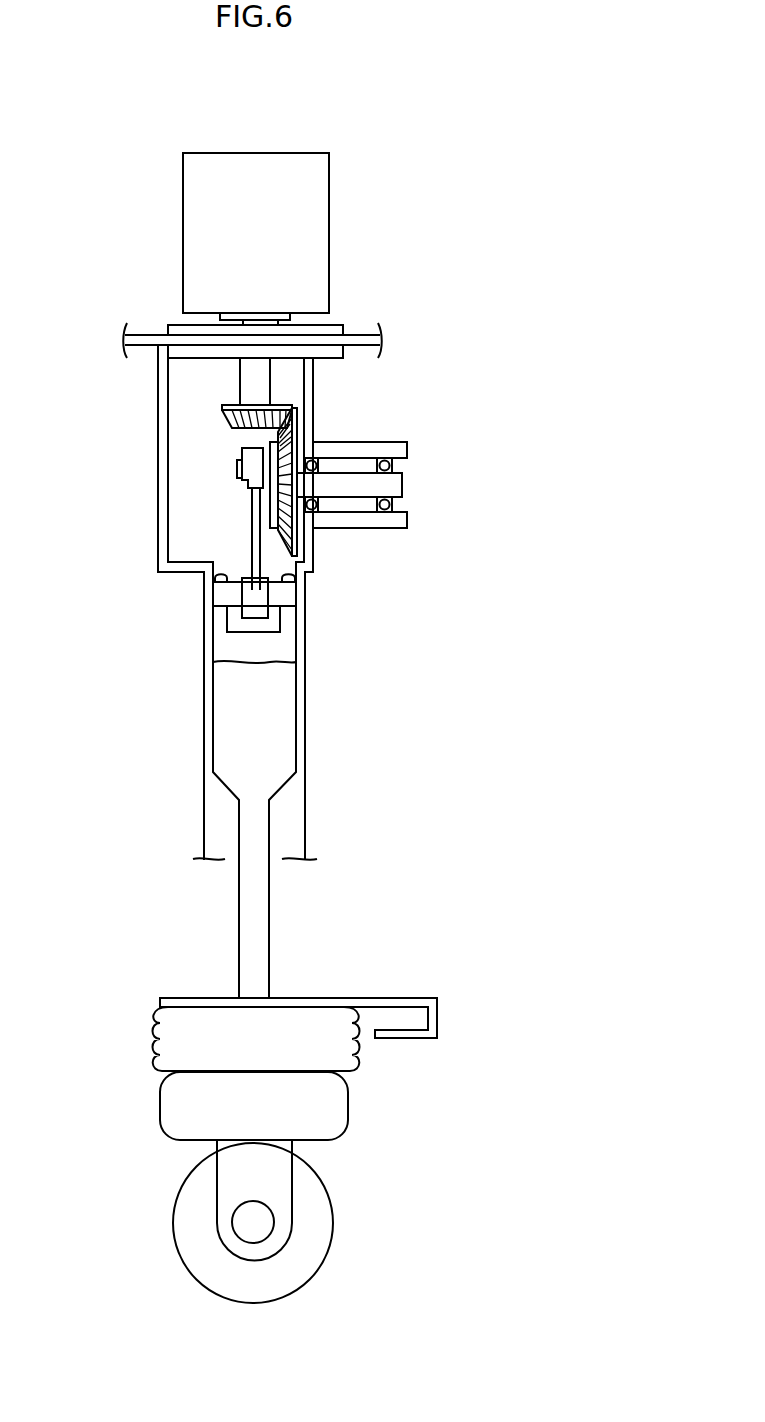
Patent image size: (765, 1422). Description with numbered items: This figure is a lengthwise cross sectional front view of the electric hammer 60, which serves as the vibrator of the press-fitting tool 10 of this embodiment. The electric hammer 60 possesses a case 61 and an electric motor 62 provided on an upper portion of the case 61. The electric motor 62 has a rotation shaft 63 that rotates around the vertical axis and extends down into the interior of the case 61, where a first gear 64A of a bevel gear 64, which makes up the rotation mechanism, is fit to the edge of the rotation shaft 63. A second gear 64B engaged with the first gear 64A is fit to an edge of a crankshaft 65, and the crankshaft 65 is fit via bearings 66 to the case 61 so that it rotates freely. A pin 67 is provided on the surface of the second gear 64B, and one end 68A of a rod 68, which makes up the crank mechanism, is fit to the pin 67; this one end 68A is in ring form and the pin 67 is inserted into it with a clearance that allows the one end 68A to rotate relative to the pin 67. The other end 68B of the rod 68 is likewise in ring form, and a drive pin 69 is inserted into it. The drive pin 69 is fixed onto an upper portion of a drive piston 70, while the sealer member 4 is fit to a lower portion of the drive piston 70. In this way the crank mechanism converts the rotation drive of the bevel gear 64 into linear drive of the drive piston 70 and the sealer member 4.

The press-fitting tool 10 is at (360, 147).
The sealer member 4 is at (382, 986).
The electric hammer 60 is at (374, 265).
The case 61 is at (212, 647).
The electric motor 62 is at (207, 245).
The rotation shaft 63 is at (240, 373).
The bevel gear 64 is at (417, 367).
The first gear 64A is at (285, 412).
The second gear 64B is at (279, 447).
The crankshaft 65 is at (372, 487).
The bearing 66 is at (315, 512).
The pin 67 is at (238, 470).
The rod 68 is at (253, 537).
The one end of rod 68A is at (243, 475).
The other end of rod 68B is at (255, 590).
The drive pin 69 is at (235, 596).
The drive piston 70 is at (248, 720).